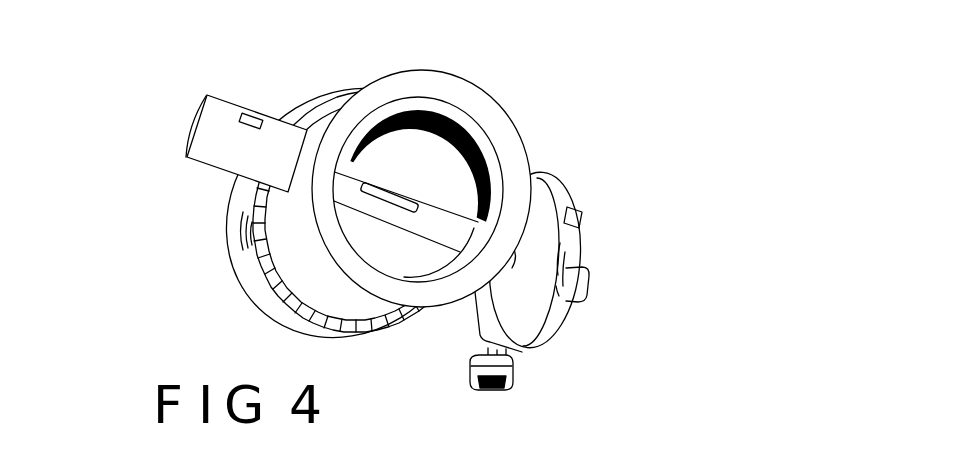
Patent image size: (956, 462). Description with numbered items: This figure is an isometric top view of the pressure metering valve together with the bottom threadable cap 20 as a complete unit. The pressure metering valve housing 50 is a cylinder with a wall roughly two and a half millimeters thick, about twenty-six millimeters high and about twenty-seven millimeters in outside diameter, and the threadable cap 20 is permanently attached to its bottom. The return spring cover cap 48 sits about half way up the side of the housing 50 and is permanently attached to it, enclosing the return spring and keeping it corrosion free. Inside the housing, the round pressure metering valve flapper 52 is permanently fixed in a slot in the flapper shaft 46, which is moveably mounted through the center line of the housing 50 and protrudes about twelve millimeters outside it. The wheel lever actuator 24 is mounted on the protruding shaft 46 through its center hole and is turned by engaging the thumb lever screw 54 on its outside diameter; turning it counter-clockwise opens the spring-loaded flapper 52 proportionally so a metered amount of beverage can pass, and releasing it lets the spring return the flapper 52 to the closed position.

The bottom threadable cap 20 is at (268, 288).
The wheel lever actuator 24 is at (597, 255).
The flapper shaft 46 is at (415, 197).
The return spring cover cap 48 is at (247, 132).
The pressure metering valve housing 50 is at (300, 232).
The pressure metering valve flapper 52 is at (415, 142).
The thumb lever screw 54 is at (500, 371).